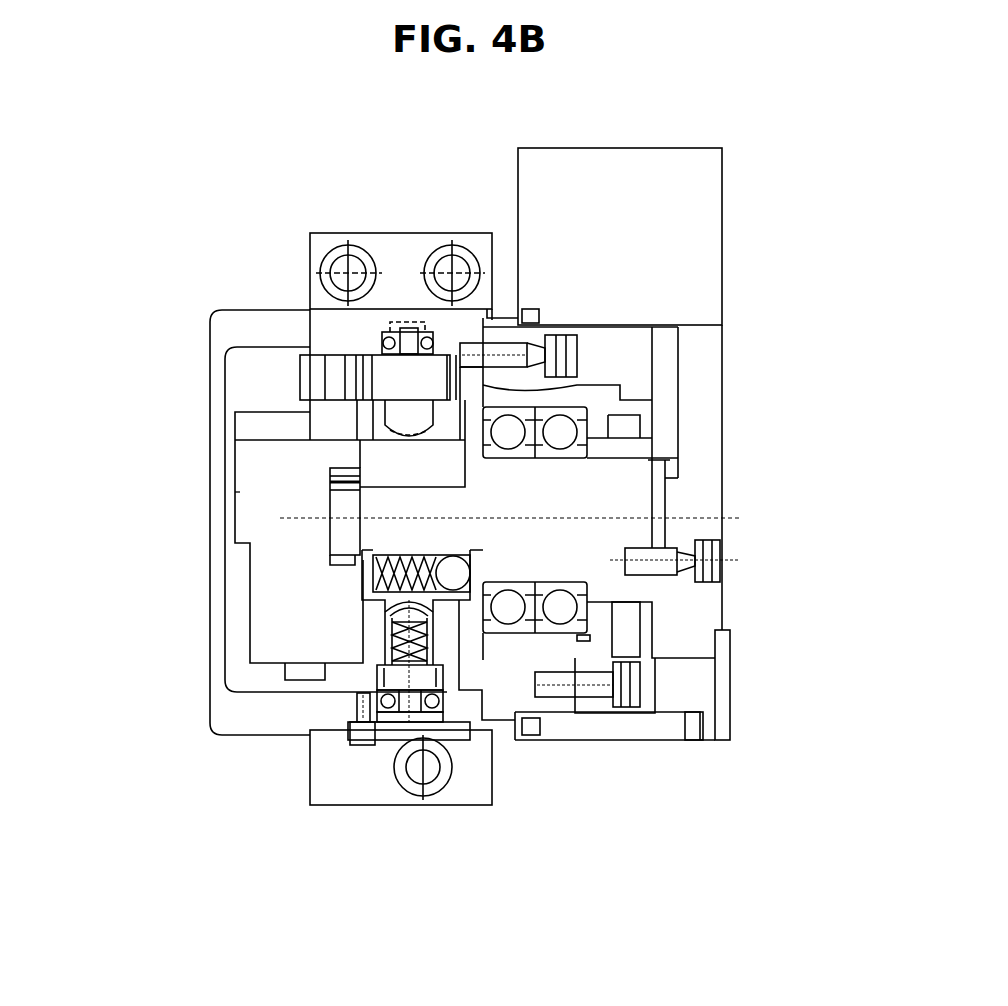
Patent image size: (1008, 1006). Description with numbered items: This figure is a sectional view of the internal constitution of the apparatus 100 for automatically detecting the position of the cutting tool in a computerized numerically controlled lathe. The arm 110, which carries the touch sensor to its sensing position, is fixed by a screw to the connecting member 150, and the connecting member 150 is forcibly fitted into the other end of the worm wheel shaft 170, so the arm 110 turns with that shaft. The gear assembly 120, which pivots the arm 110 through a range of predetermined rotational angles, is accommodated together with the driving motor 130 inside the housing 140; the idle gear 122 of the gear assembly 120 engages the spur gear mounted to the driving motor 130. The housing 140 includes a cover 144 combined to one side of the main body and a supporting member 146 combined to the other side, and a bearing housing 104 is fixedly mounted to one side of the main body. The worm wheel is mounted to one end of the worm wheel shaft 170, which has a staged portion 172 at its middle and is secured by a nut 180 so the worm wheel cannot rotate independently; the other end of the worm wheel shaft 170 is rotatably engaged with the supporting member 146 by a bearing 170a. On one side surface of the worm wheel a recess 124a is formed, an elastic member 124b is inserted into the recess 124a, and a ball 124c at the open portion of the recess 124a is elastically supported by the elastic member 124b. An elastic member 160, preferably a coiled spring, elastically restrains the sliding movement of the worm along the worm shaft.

The apparatus for automatically detecting the position of the cutting tool 100 is at (423, 132).
The bearing housing 104 is at (515, 692).
The arm 110 is at (695, 232).
The gear assembly 120 is at (322, 492).
The idle gear 122 is at (405, 415).
The recess 124a is at (373, 573).
The elastic member 124b is at (365, 585).
The ball 124c is at (458, 548).
The driving motor 130 is at (270, 617).
The housing 140 is at (205, 372).
The cover 144 is at (215, 680).
The supporting member 146 is at (577, 380).
The connecting member 150 is at (695, 608).
The elastic member 160 is at (372, 643).
The worm wheel shaft 170 is at (635, 500).
The bearing 170a is at (548, 628).
The staged portion 172 is at (440, 470).
The nut 180 is at (335, 468).